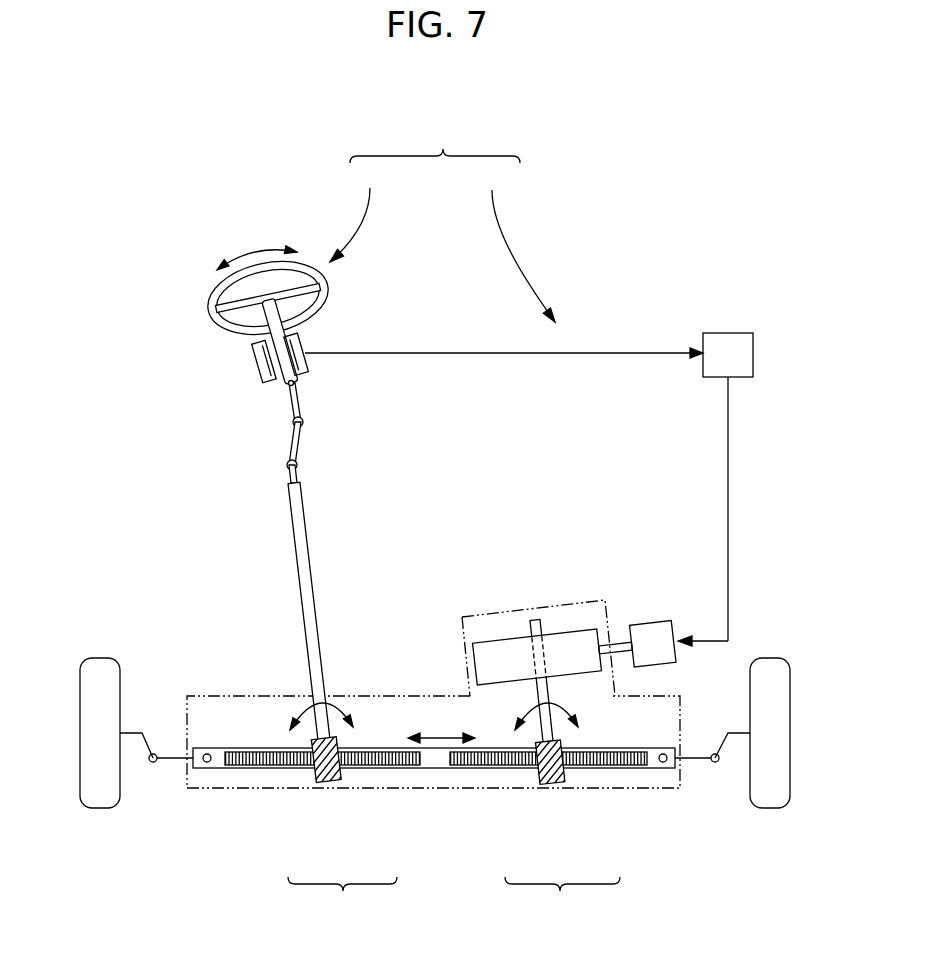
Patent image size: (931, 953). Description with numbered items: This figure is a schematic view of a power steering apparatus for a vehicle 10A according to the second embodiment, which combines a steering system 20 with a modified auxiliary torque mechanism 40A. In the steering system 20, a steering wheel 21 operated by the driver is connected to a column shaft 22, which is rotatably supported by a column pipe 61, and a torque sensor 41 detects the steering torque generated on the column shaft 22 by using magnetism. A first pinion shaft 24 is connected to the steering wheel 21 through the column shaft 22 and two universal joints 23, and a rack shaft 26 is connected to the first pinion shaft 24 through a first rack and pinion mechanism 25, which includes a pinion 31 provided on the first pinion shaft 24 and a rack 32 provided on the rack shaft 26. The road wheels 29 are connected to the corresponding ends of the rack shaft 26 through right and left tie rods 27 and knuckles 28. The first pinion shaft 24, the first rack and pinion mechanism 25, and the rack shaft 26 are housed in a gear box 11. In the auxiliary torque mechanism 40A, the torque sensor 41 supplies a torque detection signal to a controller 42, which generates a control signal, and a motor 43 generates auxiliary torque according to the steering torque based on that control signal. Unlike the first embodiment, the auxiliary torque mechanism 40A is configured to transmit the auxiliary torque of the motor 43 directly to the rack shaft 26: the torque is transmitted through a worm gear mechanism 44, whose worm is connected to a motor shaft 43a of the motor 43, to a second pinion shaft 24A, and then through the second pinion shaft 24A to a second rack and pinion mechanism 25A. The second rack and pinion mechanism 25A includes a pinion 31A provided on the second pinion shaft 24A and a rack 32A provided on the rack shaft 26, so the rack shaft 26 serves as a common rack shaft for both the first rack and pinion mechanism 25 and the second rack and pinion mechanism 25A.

The power steering apparatus for a vehicle 10A is at (435, 141).
The steering system 20 is at (355, 210).
The auxiliary torque mechanism 40A is at (516, 240).
The gear box 11 is at (232, 694).
The steering wheel 21 is at (213, 312).
The column shaft 22 is at (258, 357).
The column pipe 61 is at (262, 374).
The torque sensor 41 is at (307, 362).
The controller 42 is at (728, 345).
The universal joints 23 is at (287, 465).
The first pinion shaft 24 is at (300, 560).
The second pinion shaft 24A is at (529, 625).
The worm gear mechanism 44 is at (577, 645).
The motor 43 is at (663, 637).
The motor shaft 43a is at (617, 650).
The first rack and pinion mechanism 25 is at (342, 901).
The second rack and pinion mechanism 25A is at (562, 901).
The rack shaft 26 is at (440, 768).
The pinion 31 is at (330, 777).
The rack 32 is at (400, 768).
The pinion 31A is at (553, 782).
The rack 32A is at (623, 767).
The tie rods 27 is at (178, 760).
The knuckles 28 is at (140, 760).
The road wheels 29 is at (98, 795).